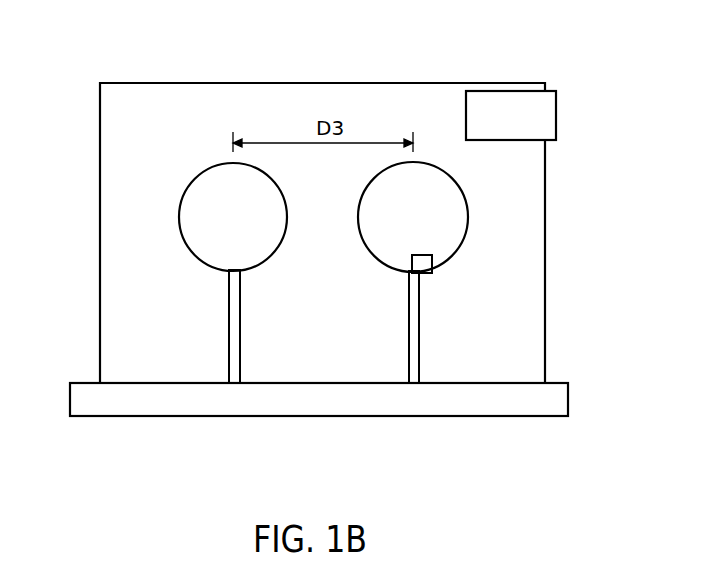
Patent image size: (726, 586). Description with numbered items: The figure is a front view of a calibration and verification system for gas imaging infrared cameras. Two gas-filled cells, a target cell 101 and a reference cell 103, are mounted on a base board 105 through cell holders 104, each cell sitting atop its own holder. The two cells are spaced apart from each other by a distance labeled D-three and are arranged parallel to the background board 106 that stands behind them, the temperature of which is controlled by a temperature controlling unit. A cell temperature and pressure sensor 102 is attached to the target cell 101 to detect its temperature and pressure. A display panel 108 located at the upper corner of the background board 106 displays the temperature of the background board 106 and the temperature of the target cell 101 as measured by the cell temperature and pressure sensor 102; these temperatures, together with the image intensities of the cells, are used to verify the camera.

The target cell 101 is at (435, 206).
The cell temperature and pressure sensor 102 is at (428, 268).
The reference cell 103 is at (202, 212).
The cell holders 104 is at (238, 340).
The base board 105 is at (158, 404).
The background board 106 is at (155, 93).
The display panel 108 is at (523, 102).